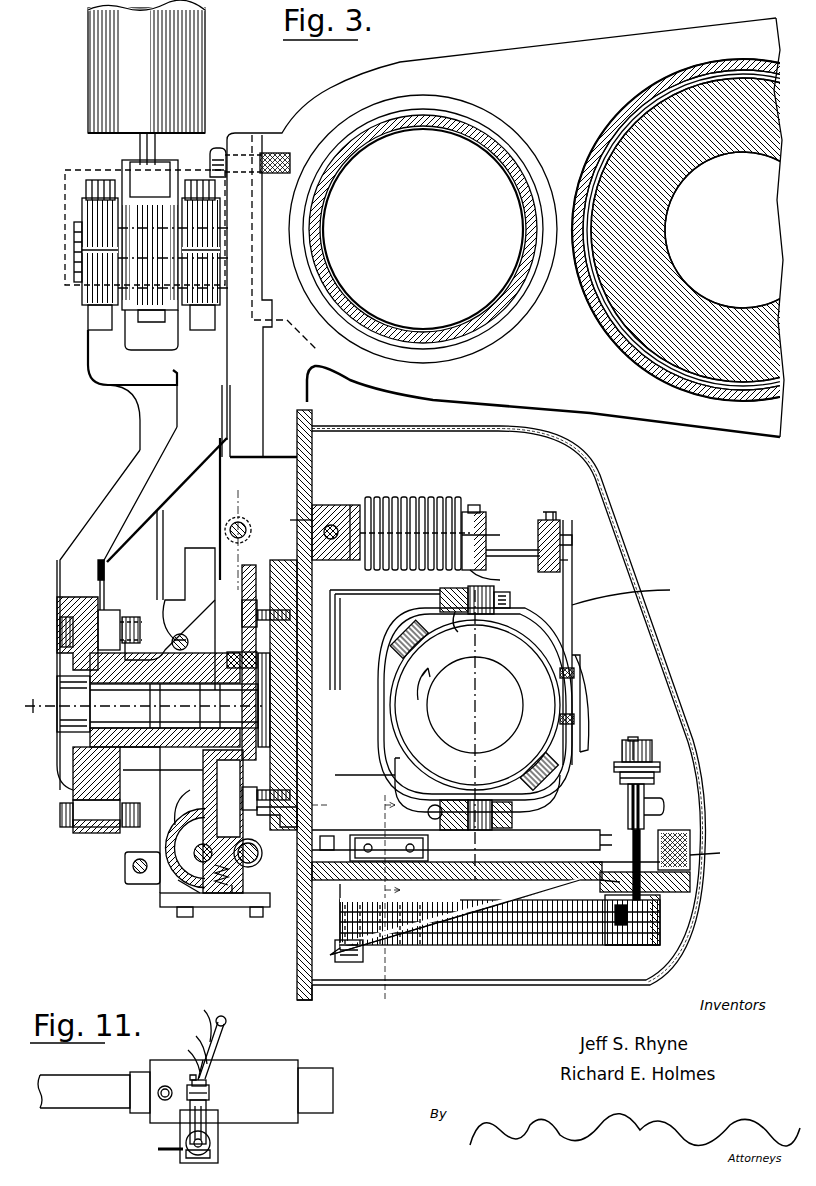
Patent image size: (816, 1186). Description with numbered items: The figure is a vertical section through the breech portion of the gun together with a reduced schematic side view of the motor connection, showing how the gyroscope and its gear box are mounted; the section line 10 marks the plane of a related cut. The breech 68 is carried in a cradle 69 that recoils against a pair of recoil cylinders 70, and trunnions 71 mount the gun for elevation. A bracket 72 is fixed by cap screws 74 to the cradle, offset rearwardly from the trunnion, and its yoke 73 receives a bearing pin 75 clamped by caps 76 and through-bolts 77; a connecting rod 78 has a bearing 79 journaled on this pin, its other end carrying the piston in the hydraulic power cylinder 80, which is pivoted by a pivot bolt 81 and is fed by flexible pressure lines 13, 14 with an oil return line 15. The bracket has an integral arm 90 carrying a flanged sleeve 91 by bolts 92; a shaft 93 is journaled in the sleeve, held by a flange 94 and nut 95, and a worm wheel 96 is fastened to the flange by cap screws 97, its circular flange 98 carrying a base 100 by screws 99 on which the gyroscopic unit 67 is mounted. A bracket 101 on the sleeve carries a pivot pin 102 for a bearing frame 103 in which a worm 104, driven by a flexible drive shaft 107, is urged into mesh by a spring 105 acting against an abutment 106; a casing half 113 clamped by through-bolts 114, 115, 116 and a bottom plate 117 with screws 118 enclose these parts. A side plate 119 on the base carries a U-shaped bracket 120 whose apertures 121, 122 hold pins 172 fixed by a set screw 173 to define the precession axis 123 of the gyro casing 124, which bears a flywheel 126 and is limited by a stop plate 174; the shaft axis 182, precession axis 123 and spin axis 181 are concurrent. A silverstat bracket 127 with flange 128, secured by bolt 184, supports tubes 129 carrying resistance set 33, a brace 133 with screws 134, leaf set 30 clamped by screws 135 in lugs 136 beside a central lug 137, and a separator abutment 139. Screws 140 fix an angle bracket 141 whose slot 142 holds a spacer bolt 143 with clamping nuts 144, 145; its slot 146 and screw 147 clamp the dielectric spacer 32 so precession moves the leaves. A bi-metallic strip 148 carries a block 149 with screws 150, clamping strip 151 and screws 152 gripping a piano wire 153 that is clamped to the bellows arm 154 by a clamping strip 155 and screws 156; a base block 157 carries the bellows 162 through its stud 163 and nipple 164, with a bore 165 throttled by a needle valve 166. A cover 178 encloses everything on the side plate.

In FIG. 3, the section line 10 is at (356, 897).
In FIG. 11, the flexible pressure line 13 is at (196, 1038).
In FIG. 11, the flexible pressure line 14 is at (204, 1012).
In FIG. 11, the oil return line 15 is at (188, 1052).
In FIG. 3, the silverstat leaf set 30 is at (548, 842).
In FIG. 3, the dielectric spacer 32 is at (632, 832).
In FIG. 3, the resistance set 33 is at (520, 945).
In FIG. 3, the gyroscopic unit 67 is at (672, 616).
In FIG. 3, the breech 68 is at (686, 283).
In FIG. 11, the breech 68 is at (328, 1082).
In FIG. 3, the cradle 69 is at (704, 418).
In FIG. 11, the cradle 69 is at (288, 1123).
In FIG. 3, the recoil cylinder 70 is at (325, 270).
In FIG. 3, the trunnion 71 is at (70, 176).
In FIG. 11, the trunnion 71 is at (162, 1087).
In FIG. 3, the bracket 72 is at (133, 435).
In FIG. 11, the bracket 72 is at (208, 1116).
In FIG. 3, the yoke 73 is at (100, 372).
In FIG. 11, the yoke 73 is at (190, 1098).
In FIG. 3, the cap screw 74 is at (219, 148).
In FIG. 3, the bearing pin 75 is at (74, 240).
In FIG. 11, the bearing pin 75 is at (190, 1078).
In FIG. 3, the cap 76 is at (82, 212).
In FIG. 11, the cap 76 is at (208, 1082).
In FIG. 3, the through-bolt 77 is at (95, 180).
In FIG. 11, the through-bolt 77 is at (208, 1096).
In FIG. 3, the connecting rod 78 is at (140, 145).
In FIG. 11, the connecting rod 78 is at (205, 1068).
In FIG. 3, the bearing 79 is at (163, 312).
In FIG. 3, the hydraulic power cylinder 80 is at (206, 52).
In FIG. 11, the hydraulic power cylinder 80 is at (222, 1040).
In FIG. 11, the pivot bolt 81 is at (226, 1020).
In FIG. 3, the arm 90 is at (98, 503).
In FIG. 3, the flanged sleeve 91 is at (150, 748).
In FIG. 3, the bolt 92 is at (57, 634).
In FIG. 3, the shaft 93 is at (161, 706).
In FIG. 11, the shaft 93 is at (210, 1152).
In FIG. 3, the flange 94 is at (232, 652).
In FIG. 3, the nut 95 is at (60, 682).
In FIG. 3, the worm wheel 96 is at (242, 583).
In FIG. 3, the cap screw 97 is at (268, 630).
In FIG. 3, the circular flange 98 is at (272, 828).
In FIG. 3, the screw 99 is at (242, 605).
In FIG. 3, the base 100 is at (275, 700).
In FIG. 3, the bracket 101 is at (203, 775).
In FIG. 3, the pivot pin 102 is at (190, 870).
In FIG. 3, the bearing frame 103 is at (258, 866).
In FIG. 3, the worm 104 is at (238, 907).
In FIG. 3, the spring 105 is at (225, 890).
In FIG. 3, the abutment 106 is at (185, 890).
In FIG. 11, the flexible drive shaft 107 is at (165, 1147).
In FIG. 3, the casing half 113 is at (212, 552).
In FIG. 3, the through-bolt 114 is at (226, 525).
In FIG. 3, the through-bolt 115 is at (125, 867).
In FIG. 3, the through-bolt 116 is at (180, 634).
In FIG. 3, the bottom plate 117 is at (172, 907).
In FIG. 3, the screw 118 is at (185, 917).
In FIG. 3, the side plate 119 is at (297, 955).
In FIG. 11, the side plate 119 is at (218, 1130).
In FIG. 3, the U-shaped bracket 120 is at (370, 598).
In FIG. 3, the aperture 121 is at (458, 612).
In FIG. 3, the aperture 122 is at (453, 830).
In FIG. 3, the precession axis 123 is at (478, 657).
In FIG. 3, the gyro casing 124 is at (540, 632).
In FIG. 3, the flywheel 126 is at (560, 645).
In FIG. 3, the silverstat bracket 127 is at (692, 882).
In FIG. 3, the flange 128 is at (322, 988).
In FIG. 3, the tube 129 is at (650, 946).
In FIG. 3, the brace 133 is at (660, 930).
In FIG. 3, the screw 134 is at (595, 882).
In FIG. 3, the clamping screw 135 is at (389, 848).
In FIG. 3, the lug 136 is at (428, 811).
In FIG. 3, the central lug 137 is at (338, 843).
In FIG. 3, the separator abutment 139 is at (690, 833).
In FIG. 3, the screw 140 is at (578, 672).
In FIG. 3, the angle bracket 141 is at (590, 692).
In FIG. 3, the slot 142 is at (658, 762).
In FIG. 3, the spacer bolt 143 is at (632, 737).
In FIG. 3, the clamping nut 144 is at (648, 740).
In FIG. 3, the clamping nut 145 is at (655, 778).
In FIG. 3, the slot 146 is at (628, 797).
In FIG. 3, the screw 147 is at (660, 800).
In FIG. 3, the bi-metallic strip 148 is at (572, 594).
In FIG. 3, the block 149 is at (538, 540).
In FIG. 3, the screw 150 is at (572, 542).
In FIG. 3, the clamping strip 151 is at (568, 562).
In FIG. 3, the screw 152 is at (560, 520).
In FIG. 3, the piano wire 153 is at (495, 552).
In FIG. 3, the bellows arm 154 is at (487, 520).
In FIG. 3, the clamping strip 155 is at (500, 580).
In FIG. 3, the screw 156 is at (474, 505).
In FIG. 3, the base block 157 is at (322, 505).
In FIG. 3, the bellows 162 is at (415, 497).
In FIG. 3, the stud 163 is at (488, 536).
In FIG. 3, the nipple 164 is at (355, 505).
In FIG. 3, the bore 165 is at (300, 522).
In FIG. 3, the needle valve 166 is at (332, 540).
In FIG. 3, the pin 172 is at (470, 572).
In FIG. 3, the set screw 173 is at (510, 599).
In FIG. 3, the stop plate 174 is at (395, 786).
In FIG. 3, the cover 178 is at (692, 672).
In FIG. 3, the spin axis 181 is at (478, 705).
In FIG. 3, the shaft axis 182 is at (36, 695).
In FIG. 3, the bolt 184 is at (365, 955).